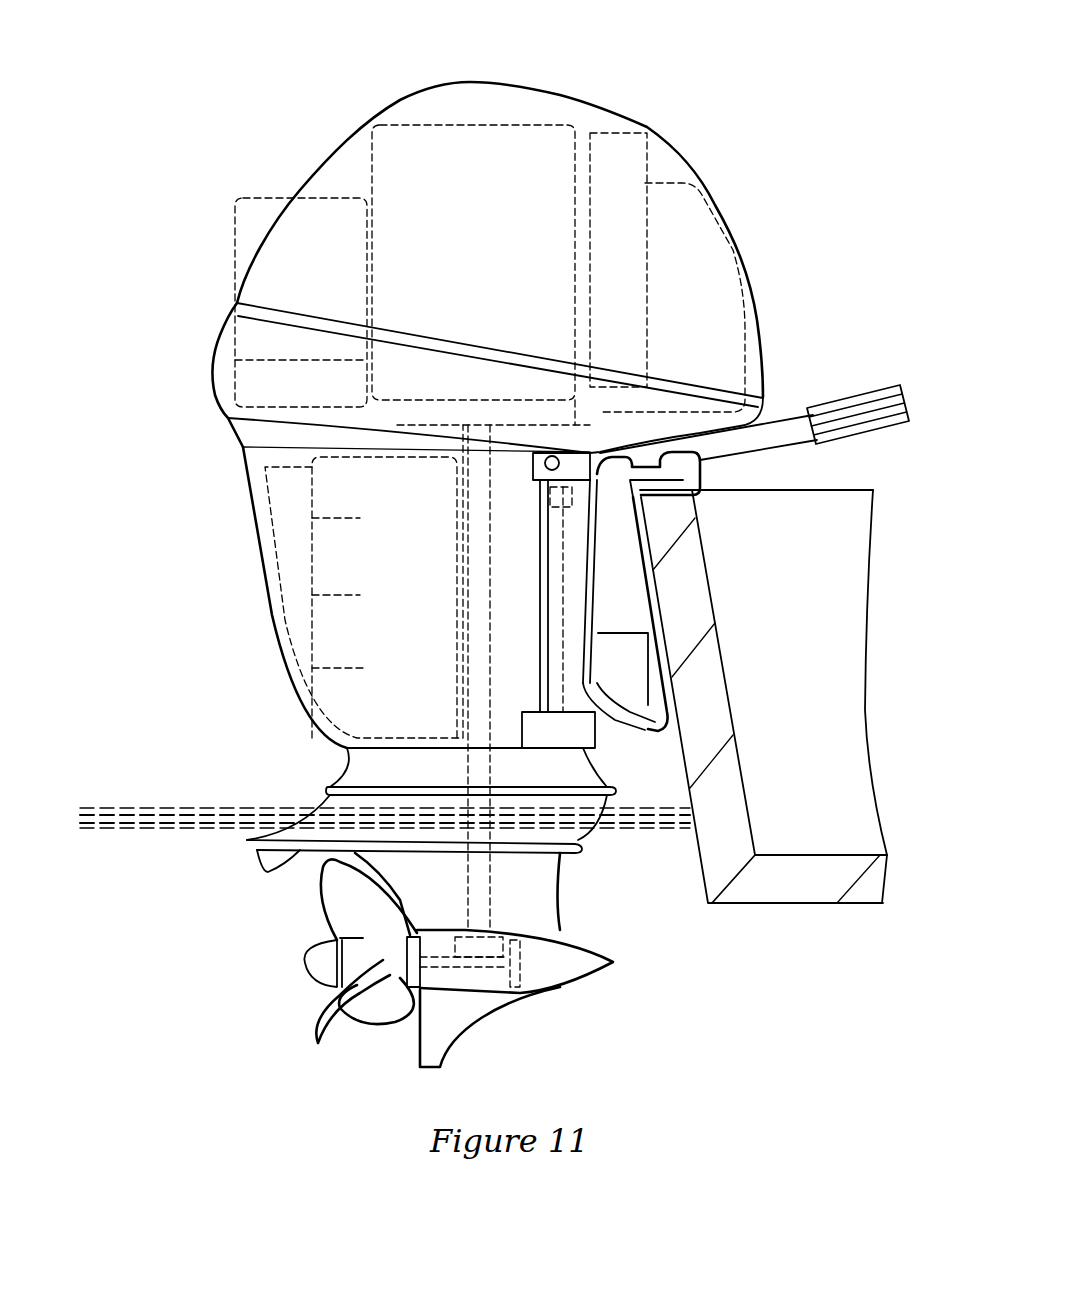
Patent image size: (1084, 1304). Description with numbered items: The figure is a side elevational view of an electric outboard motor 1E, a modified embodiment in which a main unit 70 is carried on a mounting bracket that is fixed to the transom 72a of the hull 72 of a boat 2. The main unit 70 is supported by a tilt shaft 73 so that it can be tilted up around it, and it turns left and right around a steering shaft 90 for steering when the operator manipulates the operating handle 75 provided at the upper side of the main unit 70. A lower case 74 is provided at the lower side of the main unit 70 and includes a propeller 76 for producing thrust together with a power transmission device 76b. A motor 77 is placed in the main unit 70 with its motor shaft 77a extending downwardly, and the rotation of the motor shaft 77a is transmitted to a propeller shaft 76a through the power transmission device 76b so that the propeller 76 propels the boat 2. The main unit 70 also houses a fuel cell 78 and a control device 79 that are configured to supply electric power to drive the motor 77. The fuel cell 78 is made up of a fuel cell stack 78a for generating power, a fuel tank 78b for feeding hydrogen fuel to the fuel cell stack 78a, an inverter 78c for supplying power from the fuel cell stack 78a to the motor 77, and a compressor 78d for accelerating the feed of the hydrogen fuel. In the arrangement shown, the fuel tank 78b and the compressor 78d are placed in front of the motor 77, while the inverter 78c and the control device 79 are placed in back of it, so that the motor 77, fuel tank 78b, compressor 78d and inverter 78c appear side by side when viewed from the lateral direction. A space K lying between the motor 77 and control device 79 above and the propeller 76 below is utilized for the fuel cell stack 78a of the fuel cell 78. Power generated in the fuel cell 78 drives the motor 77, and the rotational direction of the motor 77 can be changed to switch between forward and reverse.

The electric outboard motor 1E is at (685, 34).
The motor 77 is at (567, 163).
The fuel tank 78b is at (628, 163).
The compressor 78d is at (697, 220).
The inverter 78c is at (307, 223).
The control device 79 is at (255, 383).
The space K is at (262, 458).
The main unit 70 is at (250, 493).
The fuel cell stack 78a is at (347, 563).
The fuel cell 78 is at (307, 652).
The tilt shaft 73 is at (545, 468).
The steering shaft 90 is at (557, 537).
The operating handle 75 is at (793, 430).
The boat 2 is at (813, 478).
The transom 72a is at (708, 657).
The hull 72 is at (802, 905).
The lower case 74 is at (550, 920).
The motor shaft 77a is at (480, 873).
The propeller 76 is at (342, 898).
The propeller shaft 76a is at (417, 990).
The power transmission device 76b is at (528, 972).